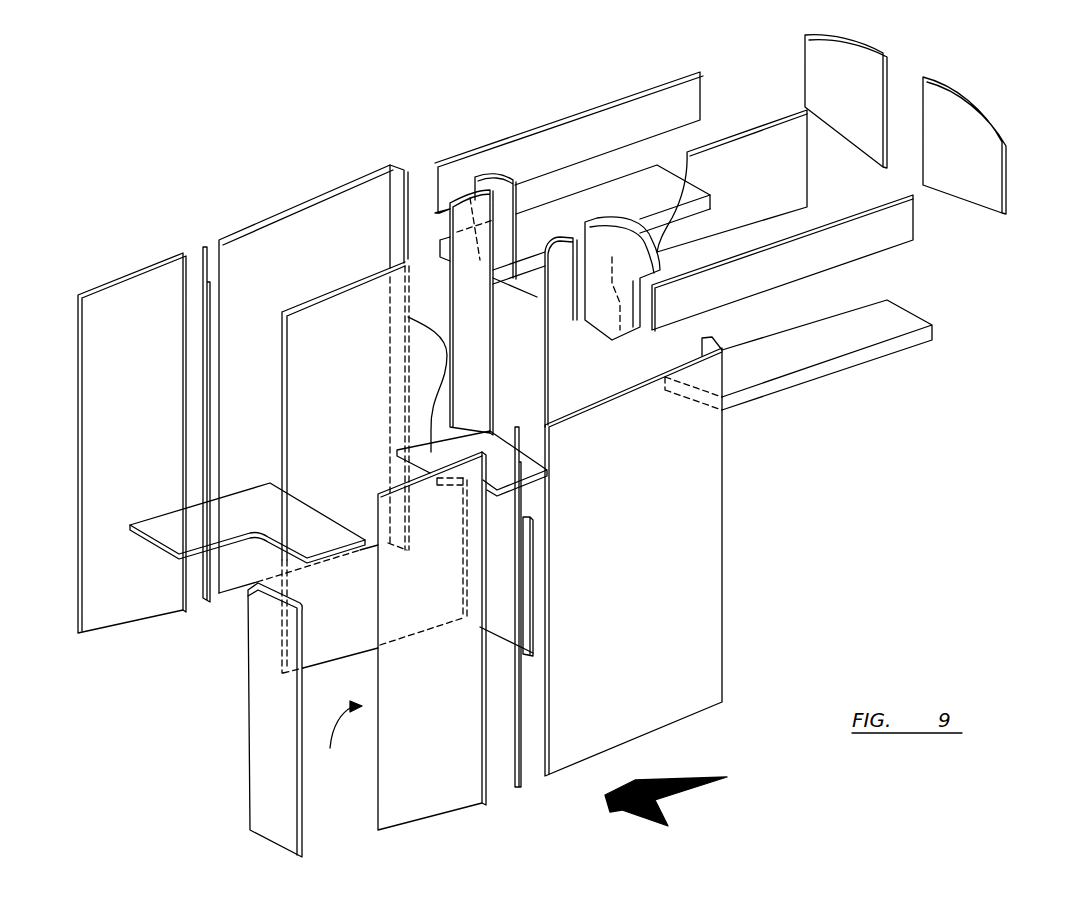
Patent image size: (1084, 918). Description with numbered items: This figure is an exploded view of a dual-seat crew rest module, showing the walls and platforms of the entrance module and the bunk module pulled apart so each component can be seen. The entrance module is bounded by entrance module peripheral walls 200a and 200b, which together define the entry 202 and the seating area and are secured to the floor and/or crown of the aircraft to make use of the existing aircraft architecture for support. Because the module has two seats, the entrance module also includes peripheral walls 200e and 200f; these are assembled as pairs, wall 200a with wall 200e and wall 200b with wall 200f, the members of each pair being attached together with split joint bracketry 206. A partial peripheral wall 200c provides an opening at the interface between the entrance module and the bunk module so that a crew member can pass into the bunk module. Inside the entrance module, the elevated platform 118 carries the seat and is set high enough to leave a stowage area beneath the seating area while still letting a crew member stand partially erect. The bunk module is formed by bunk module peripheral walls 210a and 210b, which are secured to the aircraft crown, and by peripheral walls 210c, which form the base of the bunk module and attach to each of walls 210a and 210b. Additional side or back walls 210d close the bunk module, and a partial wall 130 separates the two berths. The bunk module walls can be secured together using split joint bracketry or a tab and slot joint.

The elevated platform 118 is at (500, 468).
The partial wall 130 is at (753, 163).
The entrance module peripheral wall 200a is at (248, 258).
The entrance module peripheral wall 200b is at (560, 748).
The peripheral wall 200c is at (262, 733).
The peripheral wall 200e is at (108, 320).
The peripheral wall 200f is at (433, 790).
The entry 202 is at (342, 738).
The split joint bracketry 206 is at (203, 247).
The bunk module peripheral wall 210a is at (593, 132).
The bunk module peripheral wall 210b is at (880, 243).
The bunk module peripheral wall 210c is at (630, 187).
The side or back wall 210d is at (853, 72).